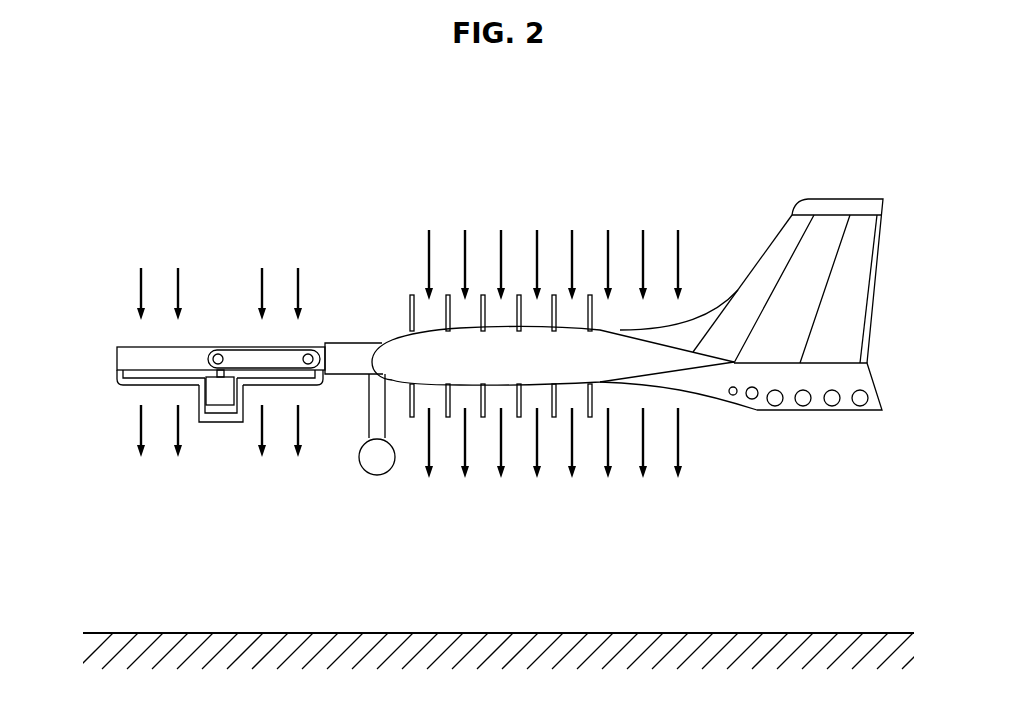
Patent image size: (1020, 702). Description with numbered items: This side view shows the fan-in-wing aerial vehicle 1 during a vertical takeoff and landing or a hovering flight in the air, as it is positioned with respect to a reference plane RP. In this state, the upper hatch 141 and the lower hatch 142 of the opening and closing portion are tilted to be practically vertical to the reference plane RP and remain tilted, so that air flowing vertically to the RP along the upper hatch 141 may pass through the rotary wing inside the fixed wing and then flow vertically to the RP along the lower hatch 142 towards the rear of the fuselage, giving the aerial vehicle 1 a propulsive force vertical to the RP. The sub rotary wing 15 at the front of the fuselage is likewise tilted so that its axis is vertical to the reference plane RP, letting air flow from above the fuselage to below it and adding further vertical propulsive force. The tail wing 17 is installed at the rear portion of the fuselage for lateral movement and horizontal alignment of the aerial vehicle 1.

The aerial vehicle 1 is at (486, 125).
The sub rotary wing 15 is at (133, 357).
The upper hatch 141 is at (413, 295).
The lower hatch 142 is at (411, 420).
The tail wing 17 is at (847, 278).
The reference plane RP is at (840, 633).